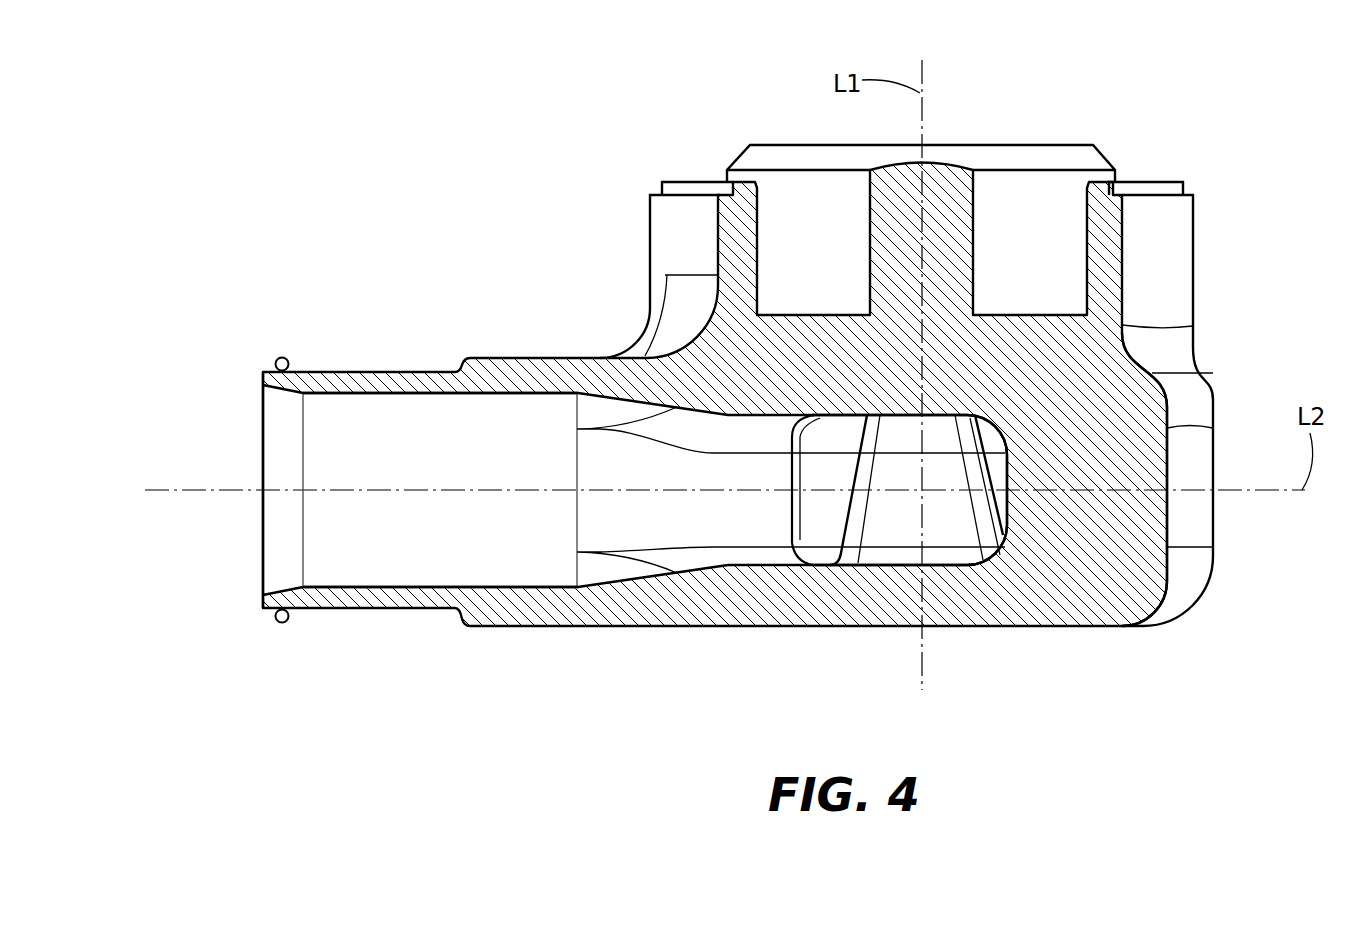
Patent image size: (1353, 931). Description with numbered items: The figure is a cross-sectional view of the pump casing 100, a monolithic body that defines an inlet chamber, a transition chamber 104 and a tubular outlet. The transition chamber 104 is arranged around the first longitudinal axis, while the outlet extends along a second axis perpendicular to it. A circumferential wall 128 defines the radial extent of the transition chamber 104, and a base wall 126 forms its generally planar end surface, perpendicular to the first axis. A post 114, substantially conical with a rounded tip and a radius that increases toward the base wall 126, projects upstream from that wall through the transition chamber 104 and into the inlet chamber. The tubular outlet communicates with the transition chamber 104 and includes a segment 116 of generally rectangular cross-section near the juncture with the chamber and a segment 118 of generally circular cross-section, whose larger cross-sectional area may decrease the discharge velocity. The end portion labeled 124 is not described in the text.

The pump casing 100 is at (340, 118).
The transition chamber 104 is at (838, 503).
The post 114 is at (957, 515).
The segment 116 is at (655, 473).
The segment 118 is at (444, 540).
The inlet tube 124 is at (263, 553).
The base wall 126 is at (808, 558).
The wall 128 is at (1112, 518).